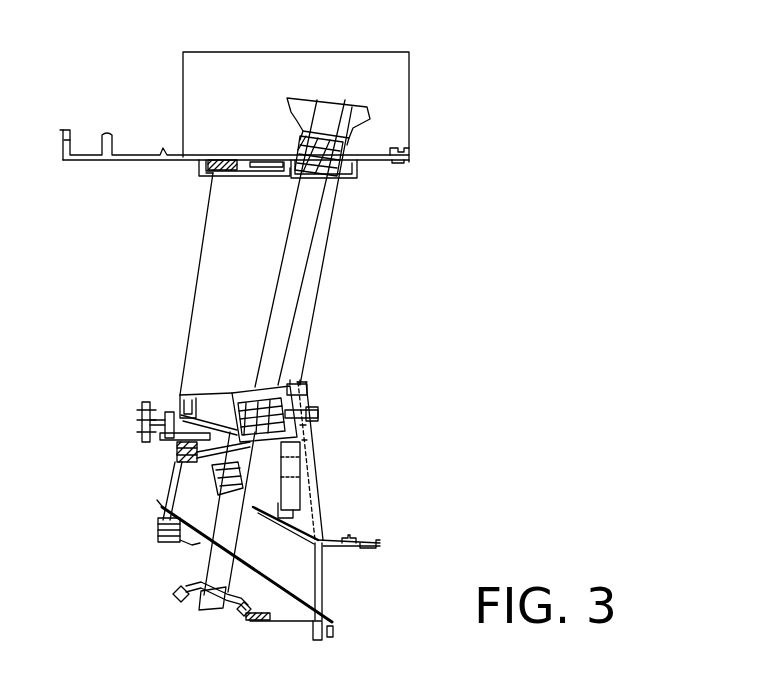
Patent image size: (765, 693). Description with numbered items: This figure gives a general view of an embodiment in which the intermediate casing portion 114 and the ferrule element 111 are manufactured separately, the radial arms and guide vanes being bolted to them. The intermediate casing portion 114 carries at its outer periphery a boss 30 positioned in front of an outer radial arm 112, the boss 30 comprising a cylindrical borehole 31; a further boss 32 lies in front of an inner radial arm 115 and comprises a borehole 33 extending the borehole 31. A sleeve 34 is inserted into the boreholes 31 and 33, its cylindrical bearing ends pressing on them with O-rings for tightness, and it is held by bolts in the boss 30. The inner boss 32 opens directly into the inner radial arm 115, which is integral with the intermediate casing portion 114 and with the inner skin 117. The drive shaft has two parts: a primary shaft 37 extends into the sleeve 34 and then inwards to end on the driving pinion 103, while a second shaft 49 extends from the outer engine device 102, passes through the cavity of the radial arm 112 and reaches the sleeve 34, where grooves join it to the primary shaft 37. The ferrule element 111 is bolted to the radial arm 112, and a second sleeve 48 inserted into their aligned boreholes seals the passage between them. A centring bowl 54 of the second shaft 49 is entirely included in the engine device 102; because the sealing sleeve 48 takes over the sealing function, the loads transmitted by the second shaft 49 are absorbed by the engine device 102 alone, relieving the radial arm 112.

The engine device 102 is at (382, 52).
The ferrule element 111 is at (250, 138).
The centring bowl 54 is at (383, 118).
The second sleeve 48 is at (340, 174).
The second shaft 49 is at (307, 255).
The boss 30 is at (242, 382).
The outer radial arm 112 is at (186, 353).
The cylindrical borehole 31 is at (272, 405).
The sleeve 34 is at (306, 446).
The intermediate casing portion 114 is at (323, 458).
The further boss 32 is at (270, 502).
The borehole 33 is at (262, 498).
The driving pinion 103 is at (176, 582).
The primary shaft 37 is at (298, 574).
The inner radial arm 115 is at (245, 527).
The inner skin 117 is at (265, 603).